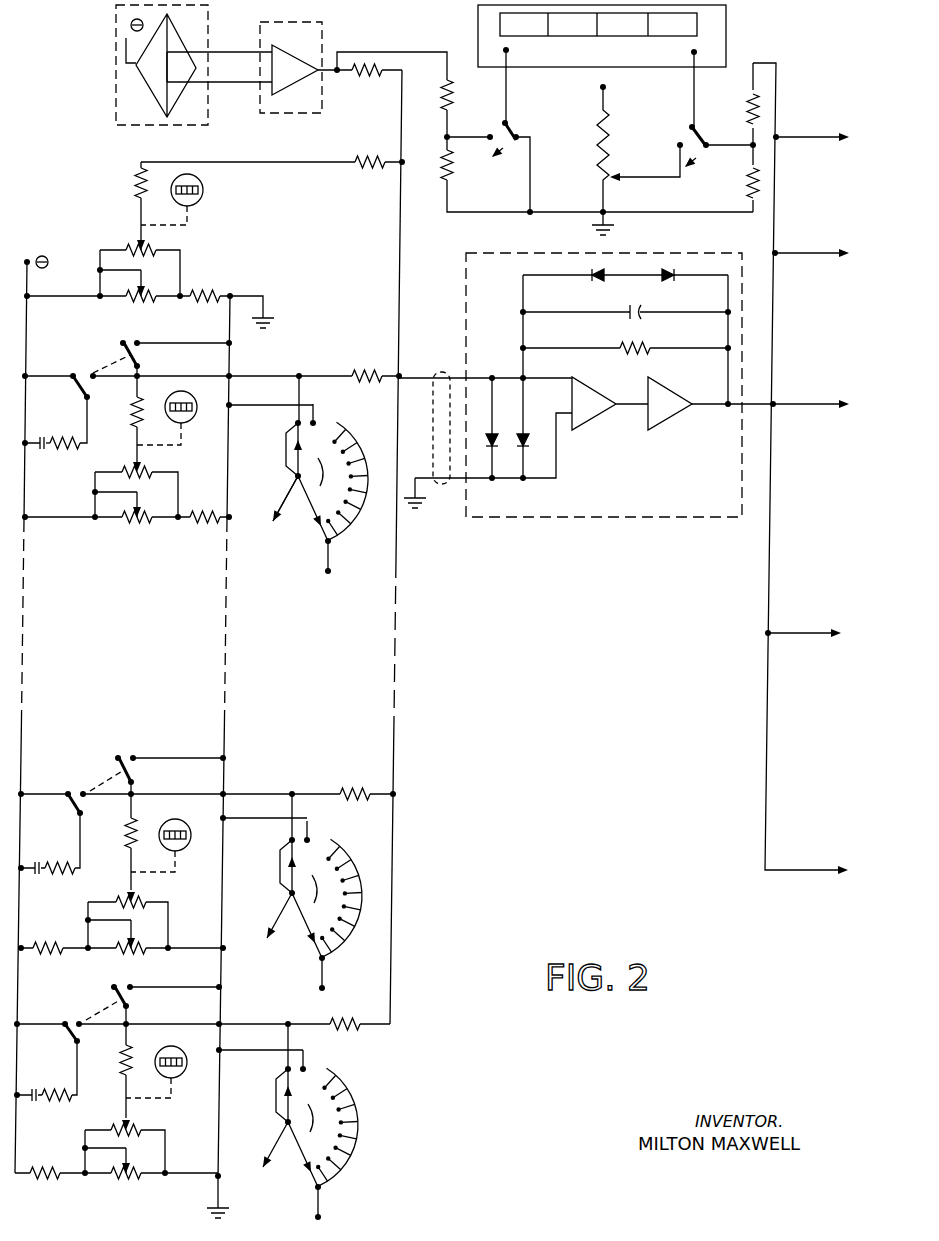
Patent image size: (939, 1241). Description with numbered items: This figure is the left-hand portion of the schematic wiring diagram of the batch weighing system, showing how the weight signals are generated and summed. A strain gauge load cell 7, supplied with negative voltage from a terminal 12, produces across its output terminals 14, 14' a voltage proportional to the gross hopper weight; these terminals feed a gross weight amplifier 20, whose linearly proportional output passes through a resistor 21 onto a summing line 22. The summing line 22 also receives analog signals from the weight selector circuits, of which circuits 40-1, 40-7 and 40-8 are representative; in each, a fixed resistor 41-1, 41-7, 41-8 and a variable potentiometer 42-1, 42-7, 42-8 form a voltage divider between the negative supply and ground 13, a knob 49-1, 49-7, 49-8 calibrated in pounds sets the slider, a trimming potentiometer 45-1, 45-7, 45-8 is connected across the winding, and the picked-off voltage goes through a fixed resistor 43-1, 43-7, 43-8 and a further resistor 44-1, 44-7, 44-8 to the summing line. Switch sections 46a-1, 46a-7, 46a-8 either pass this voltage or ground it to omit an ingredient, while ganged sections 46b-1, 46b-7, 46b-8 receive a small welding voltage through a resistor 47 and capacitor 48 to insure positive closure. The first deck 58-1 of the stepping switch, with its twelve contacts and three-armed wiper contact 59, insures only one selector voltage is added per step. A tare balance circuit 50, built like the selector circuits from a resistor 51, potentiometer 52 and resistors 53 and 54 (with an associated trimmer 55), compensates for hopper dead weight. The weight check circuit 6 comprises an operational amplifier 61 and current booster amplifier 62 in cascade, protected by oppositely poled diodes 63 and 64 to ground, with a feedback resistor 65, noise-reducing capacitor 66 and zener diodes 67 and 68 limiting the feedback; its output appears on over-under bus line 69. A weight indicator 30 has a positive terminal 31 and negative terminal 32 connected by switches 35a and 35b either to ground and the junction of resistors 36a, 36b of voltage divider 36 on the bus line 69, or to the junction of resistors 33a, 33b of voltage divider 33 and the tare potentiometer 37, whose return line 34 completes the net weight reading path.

The terminal 12 is at (126, 38).
The load cell 7 is at (176, 40).
The output terminal 14 is at (219, 95).
The output terminal 14' is at (219, 36).
The gross weight amplifier 20 is at (302, 26).
The resistor 21 is at (374, 82).
The summing line 22 is at (399, 228).
The fixed resistor 54 is at (368, 160).
The fixed resistor 53 is at (135, 176).
The variable potentiometer 52 is at (140, 240).
The tare balance circuit 50 is at (82, 257).
The potentiometer 55 is at (146, 293).
The fixed resistor 51 is at (197, 294).
The ground 13 is at (270, 324).
The weight indicator 30 is at (727, 26).
The positive terminal 31 is at (510, 51).
The negative terminal 32 is at (696, 51).
The voltage divider 33 is at (436, 138).
The resistor 33a is at (455, 93).
The resistor 33b is at (455, 180).
The switch 35a is at (520, 135).
The switch 35b is at (702, 136).
The common line 34 is at (540, 212).
The potentiometer 37 is at (600, 168).
The voltage divider 36 is at (750, 171).
The resistor 36a is at (748, 190).
The resistor 36b is at (750, 108).
The over-under bus-line 69 is at (768, 680).
The weight check circuit 6 is at (637, 517).
The operational amplifier 61 is at (584, 418).
The current booster amplifier 62 is at (670, 418).
The diode 63 is at (480, 432).
The diode 64 is at (516, 432).
The resistor 65 is at (636, 352).
The capacitor 66 is at (643, 316).
The zener diode 67 is at (603, 280).
The zener diode 68 is at (668, 280).
The weight selector circuit 40-1 is at (72, 500).
The switch section 46a-1 is at (142, 360).
The switch section 46b-1 is at (79, 374).
The resistor 47 is at (72, 450).
The capacitor 48 is at (38, 442).
The fixed value resistor 43-1 is at (134, 408).
The knob 49-1 is at (196, 401).
The variable potentiometer 42-1 is at (141, 466).
The trimming potentiometer 45-1 is at (140, 502).
The fixed resistor 41-1 is at (197, 530).
The fixed value resistor 44-1 is at (368, 372).
The deck 58-1 is at (330, 489).
The wiper contact 59 is at (307, 496).
The weight selector circuit 40-7 is at (66, 921).
The switch section 46a-7 is at (120, 757).
The switch section 46b-7 is at (76, 791).
The fixed value resistor 43-7 is at (126, 850).
The knob 49-7 is at (186, 826).
The variable potentiometer 42-7 is at (136, 897).
The trimming potentiometer 45-7 is at (135, 936).
The fixed resistor 41-7 is at (60, 956).
The fixed value resistor 44-7 is at (350, 792).
The weight selector circuit 40-8 is at (61, 1144).
The switch section 46a-8 is at (118, 986).
The switch section 46b-8 is at (78, 1021).
The fixed value resistor 43-8 is at (120, 1072).
The knob 49-8 is at (160, 1050).
The variable potentiometer 42-8 is at (130, 1124).
The trimming potentiometer 45-8 is at (110, 1178).
The fixed resistor 41-8 is at (55, 1176).
The fixed value resistor 44-8 is at (335, 1021).